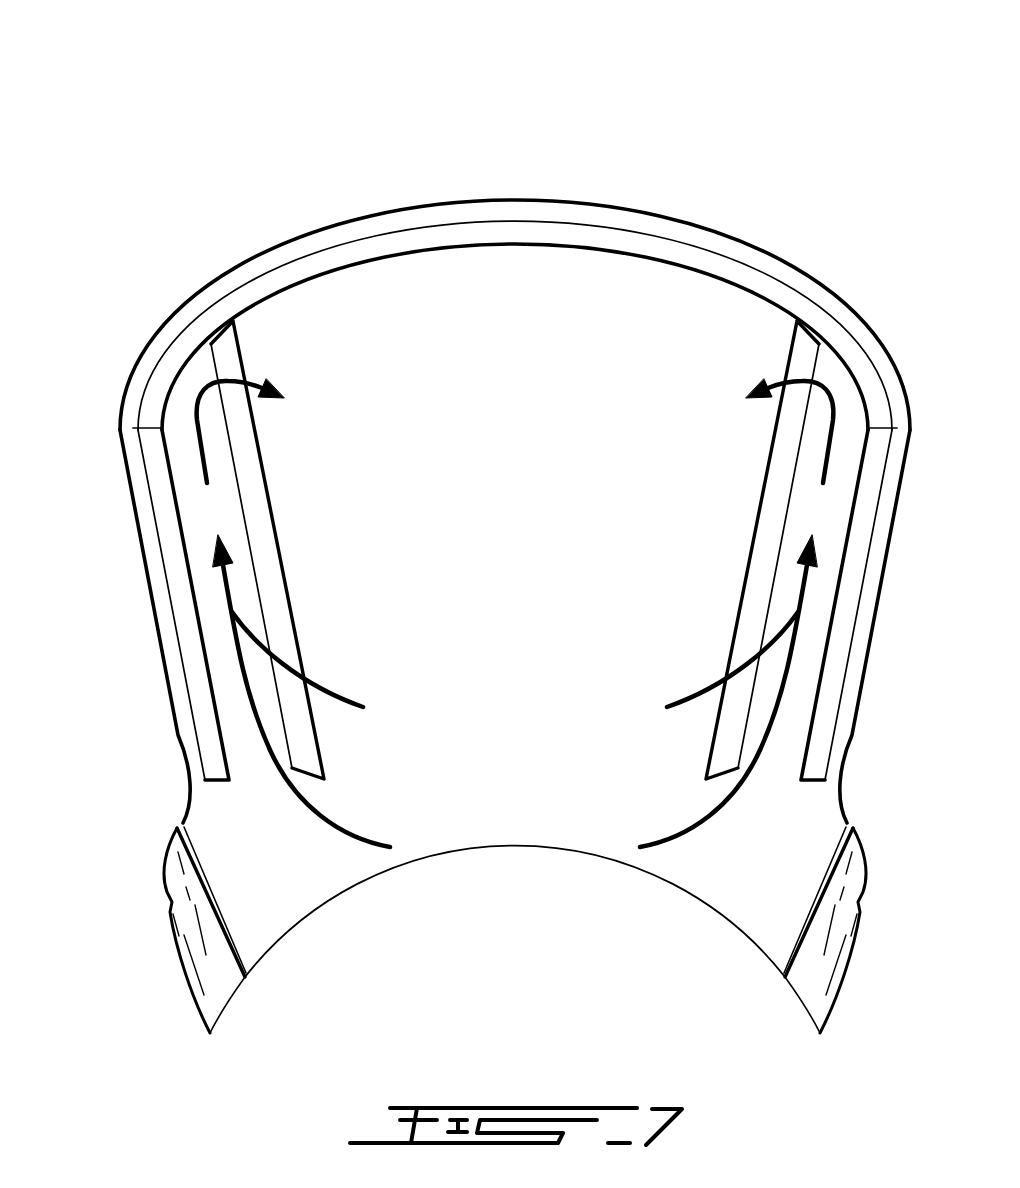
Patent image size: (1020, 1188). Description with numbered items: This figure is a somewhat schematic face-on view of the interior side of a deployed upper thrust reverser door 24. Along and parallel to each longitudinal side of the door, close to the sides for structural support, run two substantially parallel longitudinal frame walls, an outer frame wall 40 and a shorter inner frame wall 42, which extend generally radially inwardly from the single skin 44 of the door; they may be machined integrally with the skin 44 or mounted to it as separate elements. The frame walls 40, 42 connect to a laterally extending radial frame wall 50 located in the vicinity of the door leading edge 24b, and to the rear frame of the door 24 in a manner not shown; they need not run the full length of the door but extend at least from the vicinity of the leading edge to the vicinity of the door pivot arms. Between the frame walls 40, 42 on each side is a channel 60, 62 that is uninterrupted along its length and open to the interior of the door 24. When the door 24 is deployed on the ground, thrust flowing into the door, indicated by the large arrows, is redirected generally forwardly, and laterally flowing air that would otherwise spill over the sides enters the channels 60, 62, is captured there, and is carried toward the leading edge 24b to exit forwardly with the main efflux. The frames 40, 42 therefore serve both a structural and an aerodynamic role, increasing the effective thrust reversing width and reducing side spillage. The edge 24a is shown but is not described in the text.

The thrust reverser door 24 is at (358, 343).
The front edge of shell 24a is at (503, 847).
The leading edge 24b is at (733, 237).
The outer frame wall 40 is at (181, 592).
The inner frame wall 42 is at (276, 594).
The skin 44 is at (550, 484).
The radial frame wall 50 is at (528, 233).
The channel 60 is at (274, 832).
The channel 62 is at (757, 830).